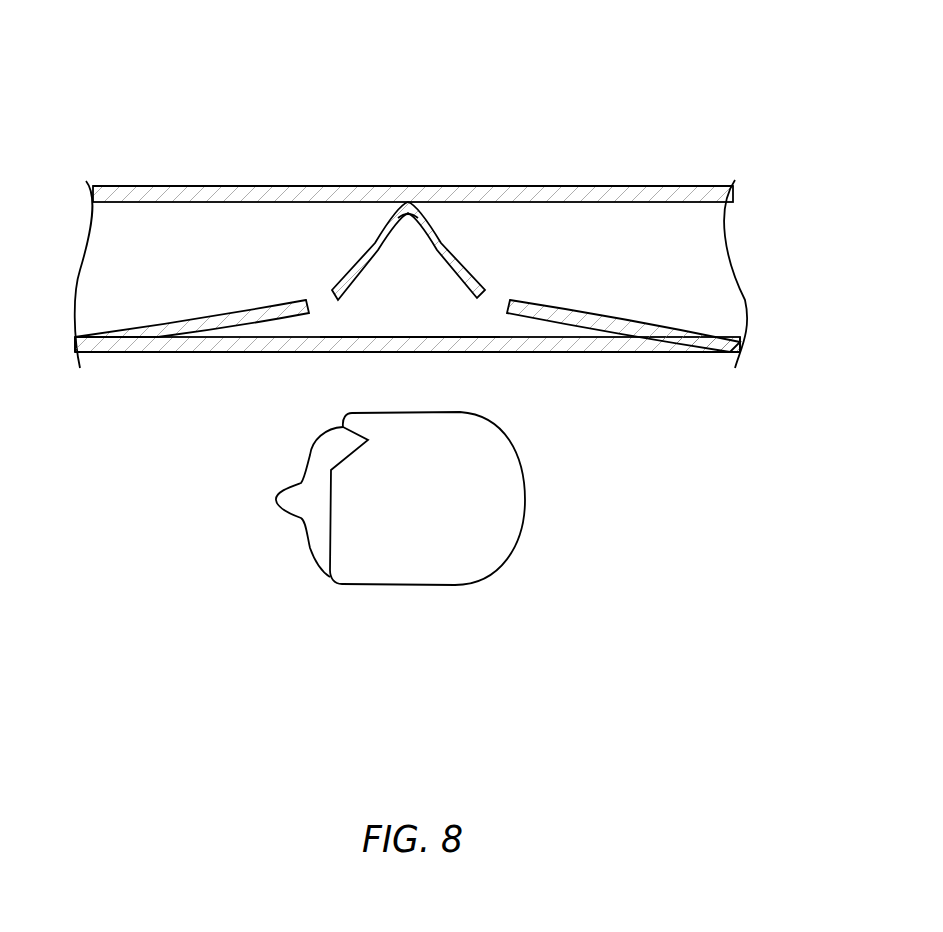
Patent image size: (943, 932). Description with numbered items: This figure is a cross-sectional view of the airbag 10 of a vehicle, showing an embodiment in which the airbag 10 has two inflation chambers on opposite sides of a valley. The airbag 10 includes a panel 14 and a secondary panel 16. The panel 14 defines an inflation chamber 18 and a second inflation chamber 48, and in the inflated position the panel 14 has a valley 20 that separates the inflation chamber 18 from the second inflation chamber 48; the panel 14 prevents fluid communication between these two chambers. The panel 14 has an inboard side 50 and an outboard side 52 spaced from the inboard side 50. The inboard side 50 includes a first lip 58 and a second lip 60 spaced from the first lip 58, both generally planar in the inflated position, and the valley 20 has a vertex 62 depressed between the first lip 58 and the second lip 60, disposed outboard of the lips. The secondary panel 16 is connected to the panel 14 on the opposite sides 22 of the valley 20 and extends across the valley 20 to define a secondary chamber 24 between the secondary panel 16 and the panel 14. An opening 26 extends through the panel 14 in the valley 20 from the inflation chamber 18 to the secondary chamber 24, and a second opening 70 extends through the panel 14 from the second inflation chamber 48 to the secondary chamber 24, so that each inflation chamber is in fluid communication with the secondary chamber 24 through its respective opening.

The airbag 10 is at (737, 80).
The panel 14 is at (258, 180).
The secondary panel 16 is at (570, 354).
The inflation chamber 18 is at (622, 230).
The valley 20 is at (404, 240).
The opposite sides of the valley 22 is at (353, 267).
The secondary chamber 24 is at (402, 322).
The opening 26 is at (498, 313).
The second inflation chamber 48 is at (150, 229).
The inboard side 50 is at (93, 358).
The outboard side 52 is at (170, 186).
The first lip 58 is at (118, 364).
The second lip 60 is at (697, 367).
The vertex 62 is at (408, 215).
The second opening 70 is at (320, 315).